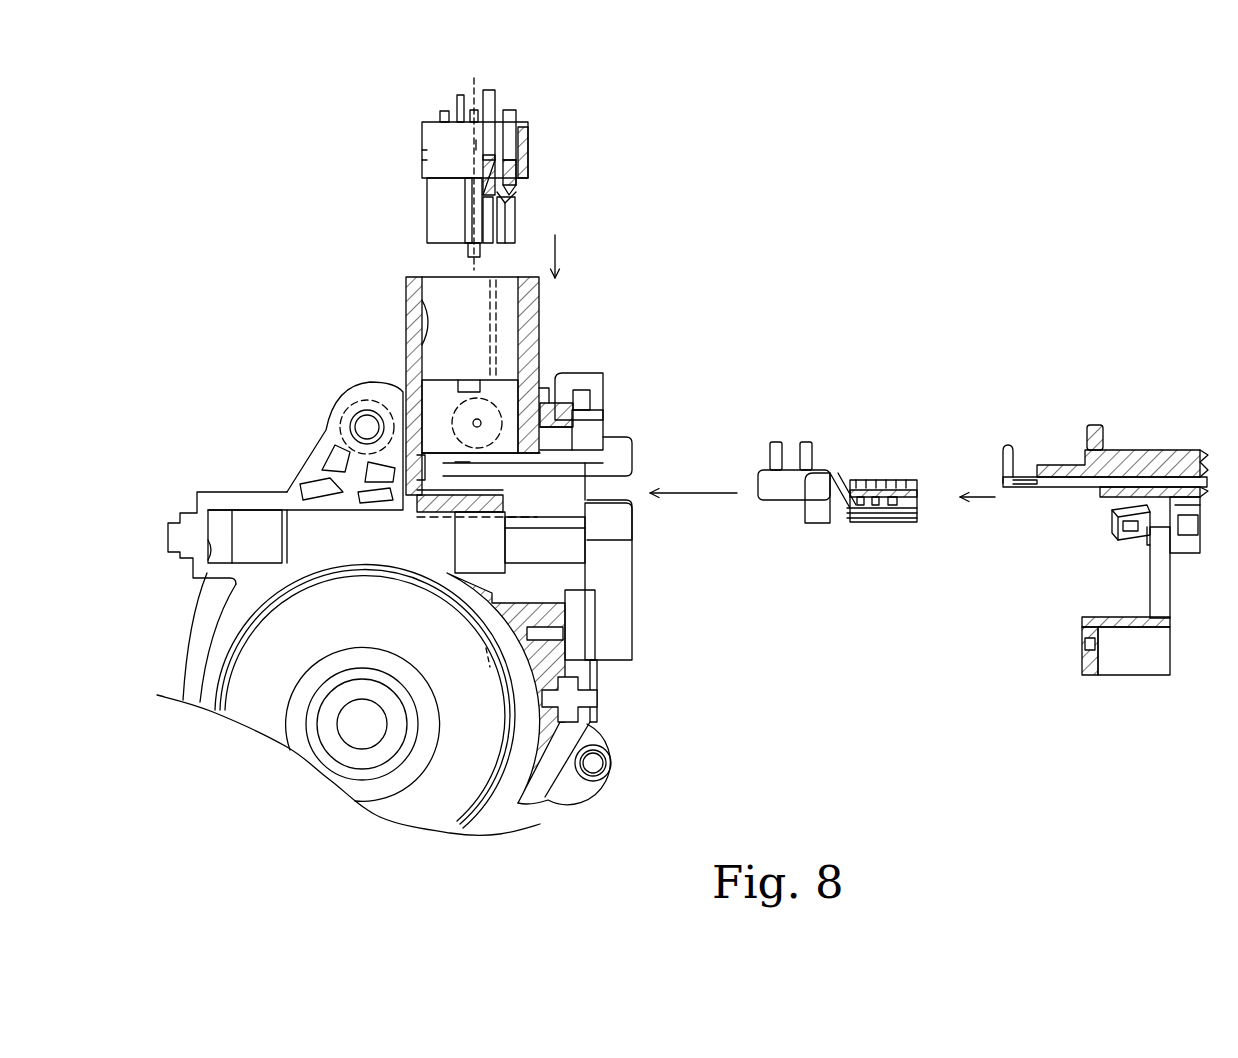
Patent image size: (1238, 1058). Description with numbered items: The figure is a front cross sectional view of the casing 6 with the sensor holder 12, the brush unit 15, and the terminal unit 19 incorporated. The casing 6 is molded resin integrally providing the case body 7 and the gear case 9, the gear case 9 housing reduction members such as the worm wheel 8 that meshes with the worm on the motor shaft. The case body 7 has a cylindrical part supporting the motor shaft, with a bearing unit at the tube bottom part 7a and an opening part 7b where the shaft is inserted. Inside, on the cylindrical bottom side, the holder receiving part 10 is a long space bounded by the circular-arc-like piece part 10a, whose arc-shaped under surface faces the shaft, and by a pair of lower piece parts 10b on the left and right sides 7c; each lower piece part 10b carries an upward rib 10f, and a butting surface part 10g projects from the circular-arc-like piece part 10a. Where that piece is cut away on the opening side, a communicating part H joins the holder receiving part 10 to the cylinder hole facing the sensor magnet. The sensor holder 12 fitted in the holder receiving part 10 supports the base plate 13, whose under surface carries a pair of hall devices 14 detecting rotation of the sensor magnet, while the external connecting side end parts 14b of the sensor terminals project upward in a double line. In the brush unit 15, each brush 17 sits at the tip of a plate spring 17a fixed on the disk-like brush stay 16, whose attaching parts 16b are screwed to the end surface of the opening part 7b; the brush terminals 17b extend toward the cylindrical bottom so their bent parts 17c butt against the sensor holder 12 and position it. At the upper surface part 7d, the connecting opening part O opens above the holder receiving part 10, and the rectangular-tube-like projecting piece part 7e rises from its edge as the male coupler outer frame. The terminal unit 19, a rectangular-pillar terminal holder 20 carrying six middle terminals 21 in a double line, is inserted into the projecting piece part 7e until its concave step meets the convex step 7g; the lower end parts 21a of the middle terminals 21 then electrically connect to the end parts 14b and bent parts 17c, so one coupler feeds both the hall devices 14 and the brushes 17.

The casing 6 is at (237, 300).
The case body 7 is at (210, 470).
The tube bottom part 7a is at (210, 563).
The opening part 7b is at (650, 645).
The left and right sides 7c is at (563, 595).
The upper surface part 7d is at (420, 470).
The rectangular-tube-like projecting piece part 7e is at (540, 332).
The convex step 7g is at (414, 280).
The worm wheel 8 is at (473, 780).
The gear case 9 is at (265, 757).
The holder receiving part 10 is at (553, 507).
The circular-arc-like piece part 10a is at (410, 507).
The lower piece parts 10b is at (560, 505).
The rib 10f is at (540, 518).
The butting surface part 10g is at (413, 463).
The sensor holder 12 is at (865, 450).
The base plate 13 is at (905, 483).
The hall devices 14 is at (893, 505).
The external connecting side end parts 14b is at (805, 445).
The brush unit 15 is at (1168, 425).
The brush stay 16 is at (1190, 455).
The attaching parts 16b is at (1095, 425).
The brush 17 is at (1123, 558).
The plate spring 17a is at (1133, 507).
The brush terminals 17b is at (1060, 488).
The bent part 17c is at (1010, 443).
The terminal unit 19 is at (543, 133).
The terminal holder 20 is at (518, 186).
The middle terminals 21 is at (517, 115).
The lower end part 21a is at (478, 227).
The connecting opening part O is at (456, 460).
The communicating part H is at (563, 520).